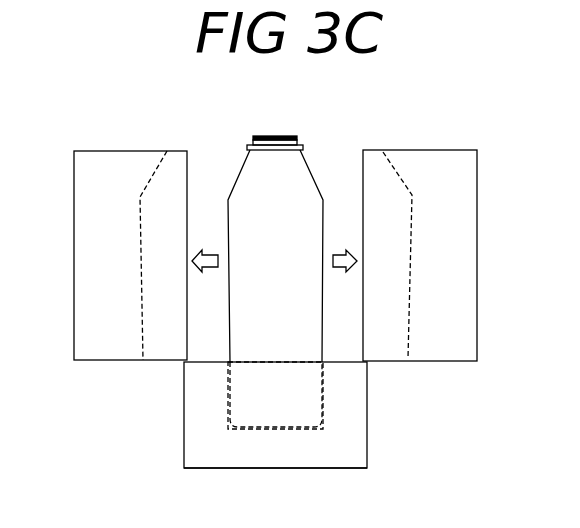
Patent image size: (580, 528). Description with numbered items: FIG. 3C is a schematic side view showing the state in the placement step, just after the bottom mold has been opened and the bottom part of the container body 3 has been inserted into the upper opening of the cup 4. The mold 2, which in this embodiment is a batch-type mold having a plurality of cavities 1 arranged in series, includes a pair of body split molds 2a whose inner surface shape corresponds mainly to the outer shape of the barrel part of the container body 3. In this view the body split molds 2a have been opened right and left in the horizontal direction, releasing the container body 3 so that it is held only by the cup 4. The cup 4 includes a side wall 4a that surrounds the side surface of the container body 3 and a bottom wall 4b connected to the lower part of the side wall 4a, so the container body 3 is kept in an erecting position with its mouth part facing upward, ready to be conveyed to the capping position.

The cavity 1 is at (143, 293).
The mold 2 is at (275, 224).
The body split mold 2a is at (87, 258).
The container body 3 is at (241, 173).
The cup 4 is at (311, 434).
The side wall 4a is at (352, 412).
The bottom wall 4b is at (312, 453).